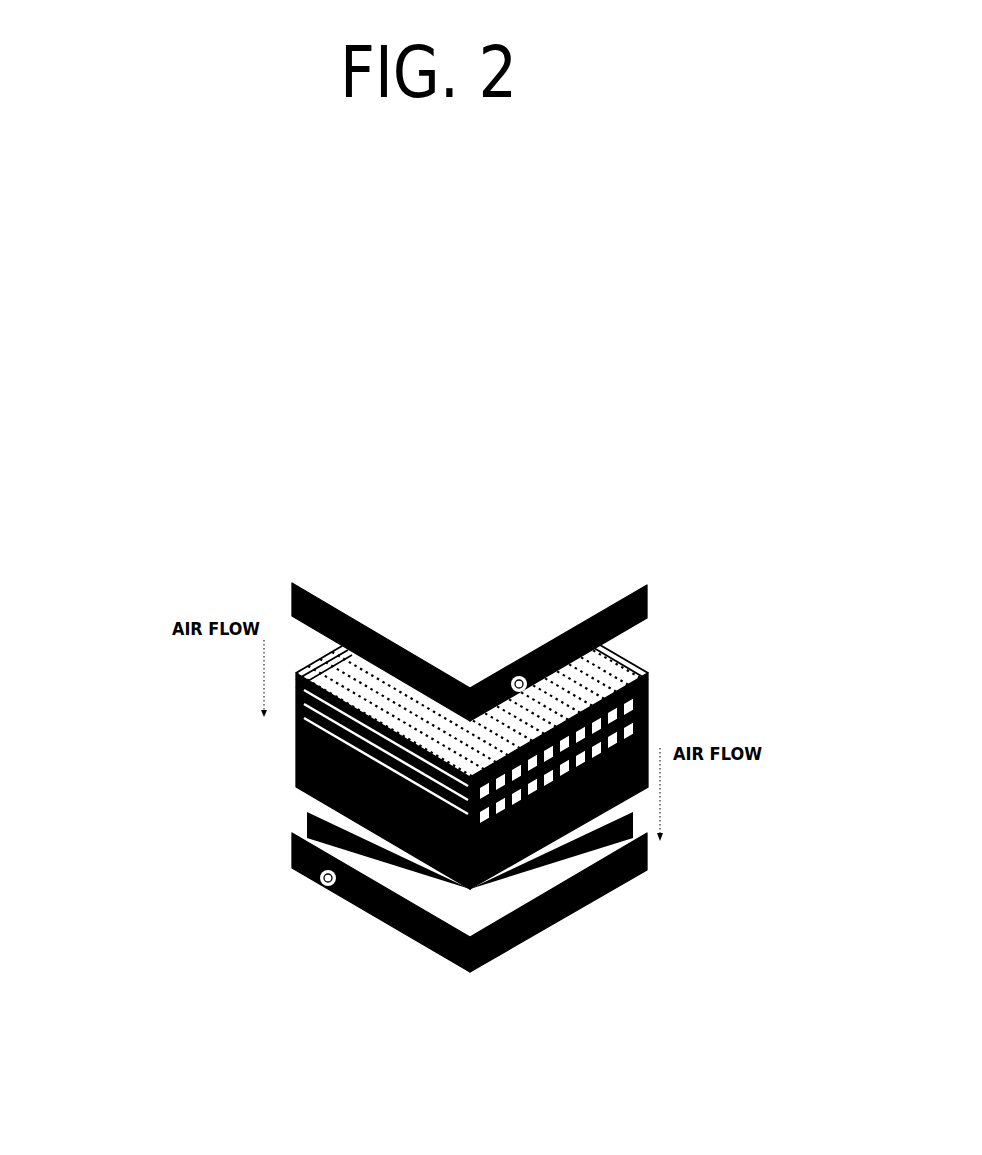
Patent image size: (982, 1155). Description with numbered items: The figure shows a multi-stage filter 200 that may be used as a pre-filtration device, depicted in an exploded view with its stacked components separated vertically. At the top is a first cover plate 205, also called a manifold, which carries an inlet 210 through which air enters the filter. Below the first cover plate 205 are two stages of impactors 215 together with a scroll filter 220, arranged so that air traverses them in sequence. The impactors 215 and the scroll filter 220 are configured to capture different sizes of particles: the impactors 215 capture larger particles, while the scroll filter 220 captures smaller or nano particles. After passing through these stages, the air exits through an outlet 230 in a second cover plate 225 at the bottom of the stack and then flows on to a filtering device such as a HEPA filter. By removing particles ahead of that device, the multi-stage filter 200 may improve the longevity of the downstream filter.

The multi-stage filter 200 is at (107, 207).
The first cover plate 205 is at (553, 572).
The inlet 210 is at (530, 685).
The impactors 215 is at (590, 675).
The scroll filter 220 is at (312, 763).
The second cover plate 225 is at (388, 896).
The outlet 230 is at (318, 882).